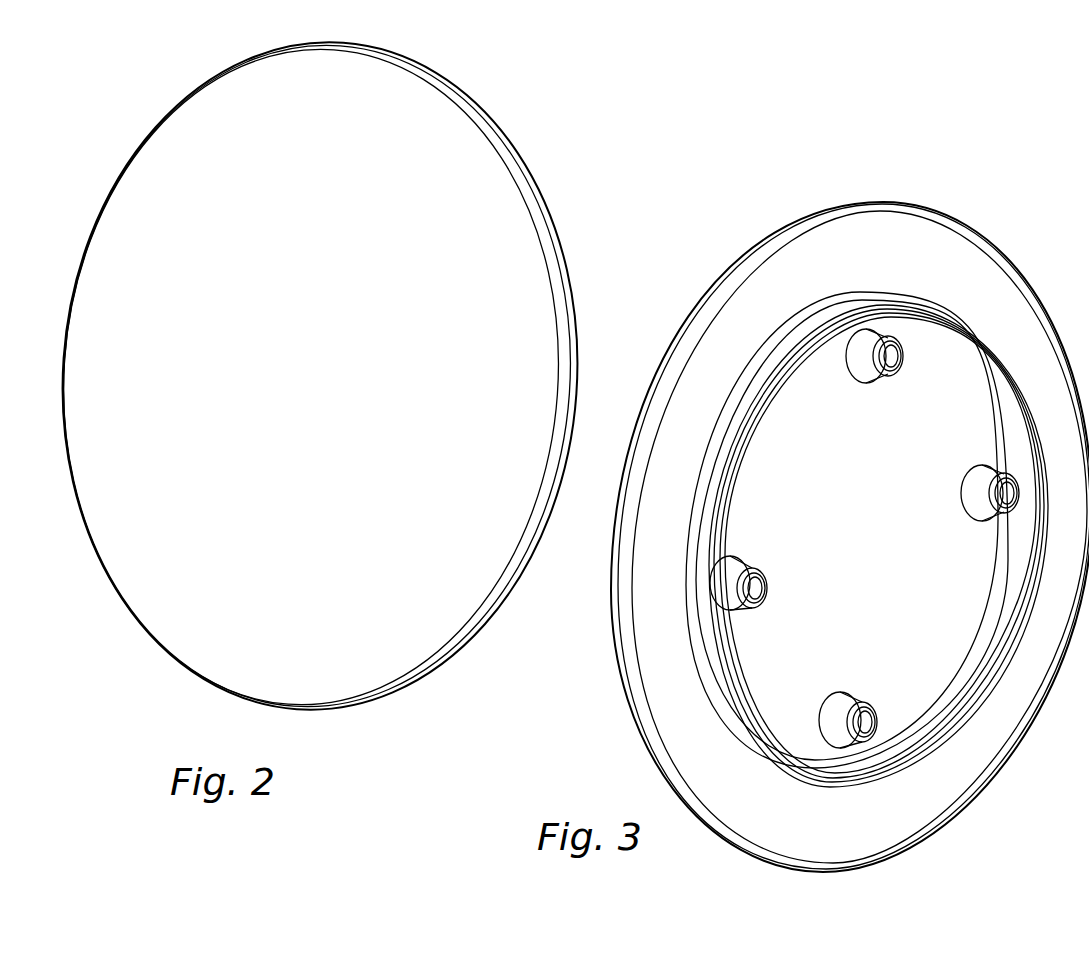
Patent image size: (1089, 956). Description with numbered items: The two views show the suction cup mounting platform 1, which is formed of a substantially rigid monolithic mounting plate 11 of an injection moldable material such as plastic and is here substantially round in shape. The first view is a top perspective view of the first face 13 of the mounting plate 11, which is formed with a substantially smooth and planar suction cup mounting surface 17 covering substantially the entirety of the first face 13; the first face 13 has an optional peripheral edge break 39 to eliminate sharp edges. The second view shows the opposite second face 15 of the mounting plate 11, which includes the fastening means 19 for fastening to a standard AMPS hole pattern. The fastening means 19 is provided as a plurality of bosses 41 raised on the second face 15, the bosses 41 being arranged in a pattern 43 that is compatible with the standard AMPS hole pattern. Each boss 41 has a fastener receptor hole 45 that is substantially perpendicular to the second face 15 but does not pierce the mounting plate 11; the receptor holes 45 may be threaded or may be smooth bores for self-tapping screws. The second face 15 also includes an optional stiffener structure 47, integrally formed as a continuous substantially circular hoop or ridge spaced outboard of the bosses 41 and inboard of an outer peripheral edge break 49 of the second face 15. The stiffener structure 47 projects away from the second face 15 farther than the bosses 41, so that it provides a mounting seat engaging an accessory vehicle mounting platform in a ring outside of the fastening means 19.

In FIG. 2, the suction cup mounting platform 1 is at (100, 210).
In FIG. 3, the suction cup mounting platform 1 is at (1047, 292).
In FIG. 2, the mounting plate 11 is at (577, 316).
In FIG. 3, the mounting plate 11 is at (853, 536).
In FIG. 2, the first face 13 is at (529, 196).
In FIG. 3, the first face 13 is at (699, 305).
In FIG. 2, the second face 15 is at (477, 637).
In FIG. 3, the second face 15 is at (990, 259).
In FIG. 2, the suction cup mounting surface 17 is at (398, 181).
In FIG. 3, the suction cup mounting surface 17 is at (733, 235).
In FIG. 2, the fastening means 19 is at (529, 600).
In FIG. 3, the fastening means 19 is at (899, 798).
In FIG. 2, the peripheral edge break 39 is at (484, 126).
In FIG. 3, the bosses 41 is at (868, 376).
In FIG. 3, the pattern 43 is at (990, 412).
In FIG. 3, the fastener receptor hole 45 is at (891, 366).
In FIG. 3, the stiffener structure 47 is at (983, 700).
In FIG. 3, the outer peripheral edge break 49 is at (956, 224).